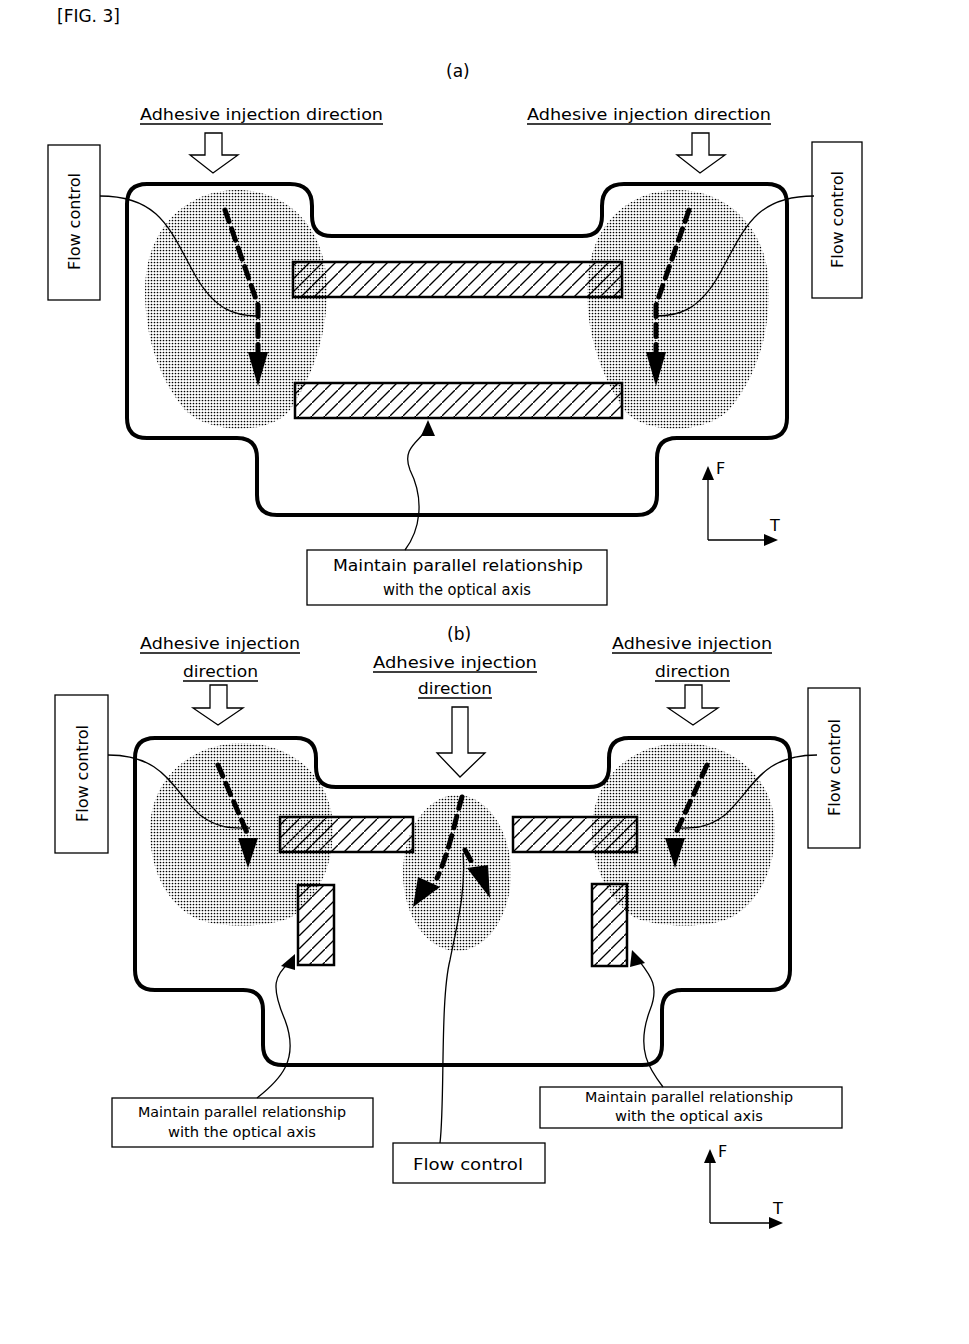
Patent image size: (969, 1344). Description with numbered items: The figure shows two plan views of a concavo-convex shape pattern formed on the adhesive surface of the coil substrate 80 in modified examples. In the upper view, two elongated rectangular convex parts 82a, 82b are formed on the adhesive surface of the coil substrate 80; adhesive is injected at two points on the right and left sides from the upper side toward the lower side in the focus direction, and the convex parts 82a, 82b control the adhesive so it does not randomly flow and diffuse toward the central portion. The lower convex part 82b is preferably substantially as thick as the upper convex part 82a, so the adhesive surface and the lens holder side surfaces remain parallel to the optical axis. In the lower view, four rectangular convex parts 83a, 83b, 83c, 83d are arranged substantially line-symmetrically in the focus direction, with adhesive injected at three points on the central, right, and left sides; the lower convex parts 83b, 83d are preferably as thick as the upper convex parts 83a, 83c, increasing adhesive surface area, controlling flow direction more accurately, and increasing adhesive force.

The coil substrate 80 is at (555, 205).
The convex part 82a is at (430, 262).
The convex part 82b is at (462, 382).
The convex part 83a is at (338, 817).
The convex part 83b is at (312, 966).
The convex part 83c is at (583, 817).
The convex part 83d is at (604, 967).